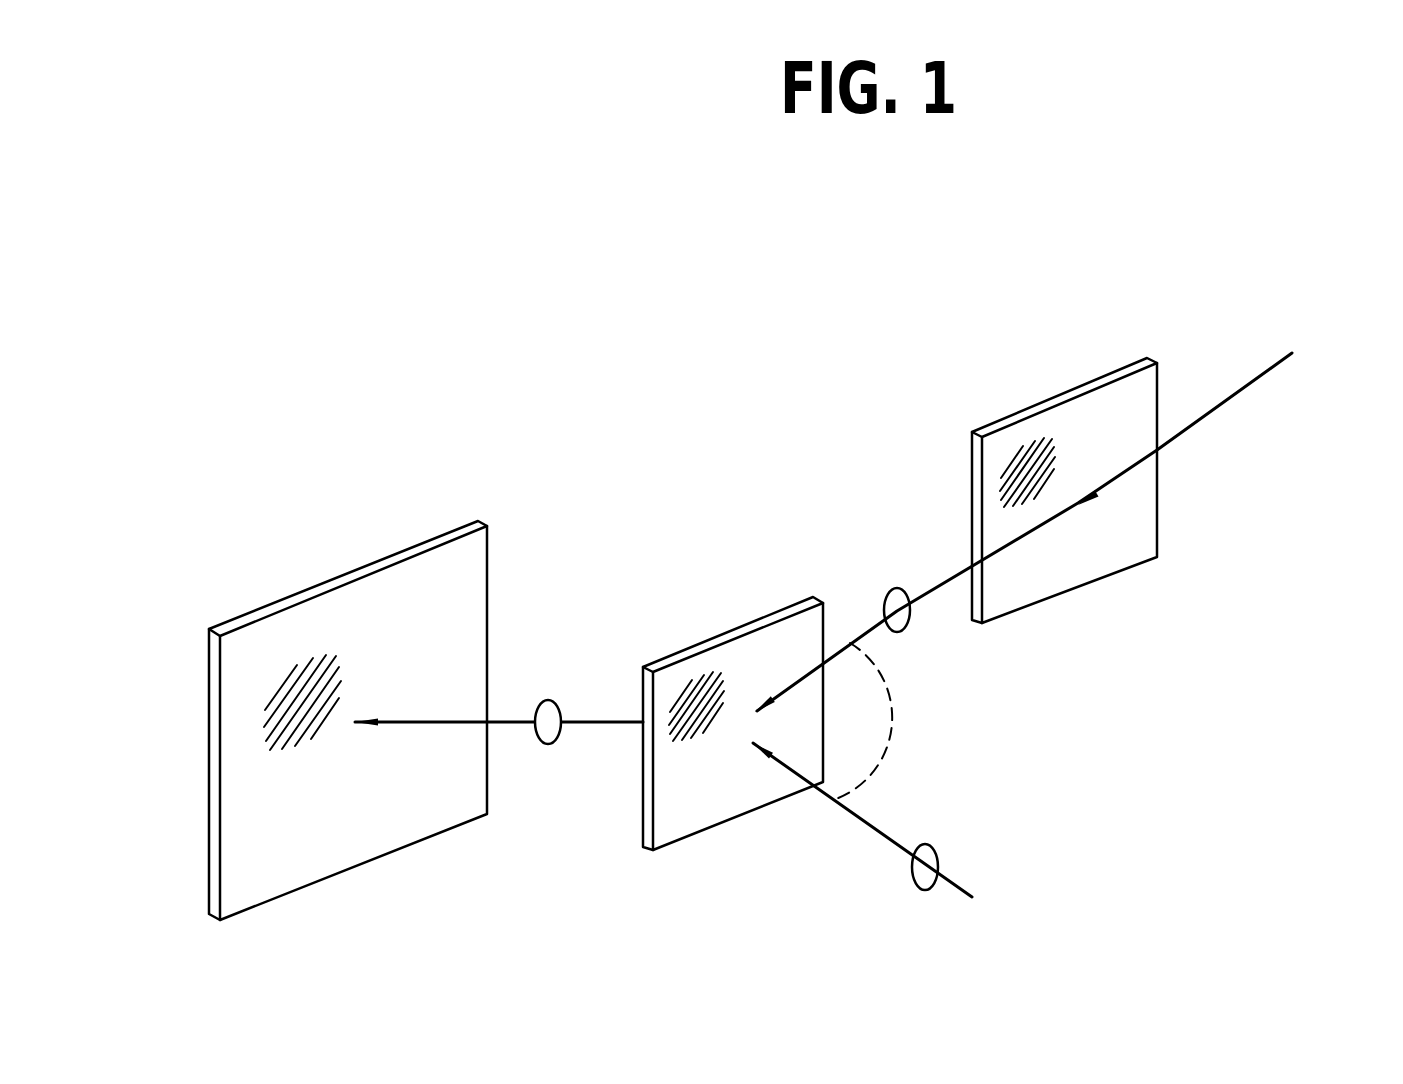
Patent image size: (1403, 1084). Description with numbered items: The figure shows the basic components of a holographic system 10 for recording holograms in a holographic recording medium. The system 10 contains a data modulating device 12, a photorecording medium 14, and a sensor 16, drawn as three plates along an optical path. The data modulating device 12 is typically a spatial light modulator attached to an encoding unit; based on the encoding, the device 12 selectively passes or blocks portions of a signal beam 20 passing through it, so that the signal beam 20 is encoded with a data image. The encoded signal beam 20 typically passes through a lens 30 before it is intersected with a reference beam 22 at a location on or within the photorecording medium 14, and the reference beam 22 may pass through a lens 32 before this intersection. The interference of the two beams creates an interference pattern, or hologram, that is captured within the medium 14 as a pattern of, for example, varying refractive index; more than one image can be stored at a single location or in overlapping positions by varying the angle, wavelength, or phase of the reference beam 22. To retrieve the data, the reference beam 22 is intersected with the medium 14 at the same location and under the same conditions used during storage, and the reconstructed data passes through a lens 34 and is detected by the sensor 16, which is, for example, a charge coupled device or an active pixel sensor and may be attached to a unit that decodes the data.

The holographic system 10 is at (745, 486).
The data modulating device 12 is at (970, 613).
The photorecording medium 14 is at (643, 837).
The sensor 16 is at (496, 554).
The signal beam 20 is at (1220, 405).
The reference beam 22 is at (963, 890).
The lens 30 is at (903, 588).
The lens 32 is at (938, 843).
The lens 34 is at (564, 694).